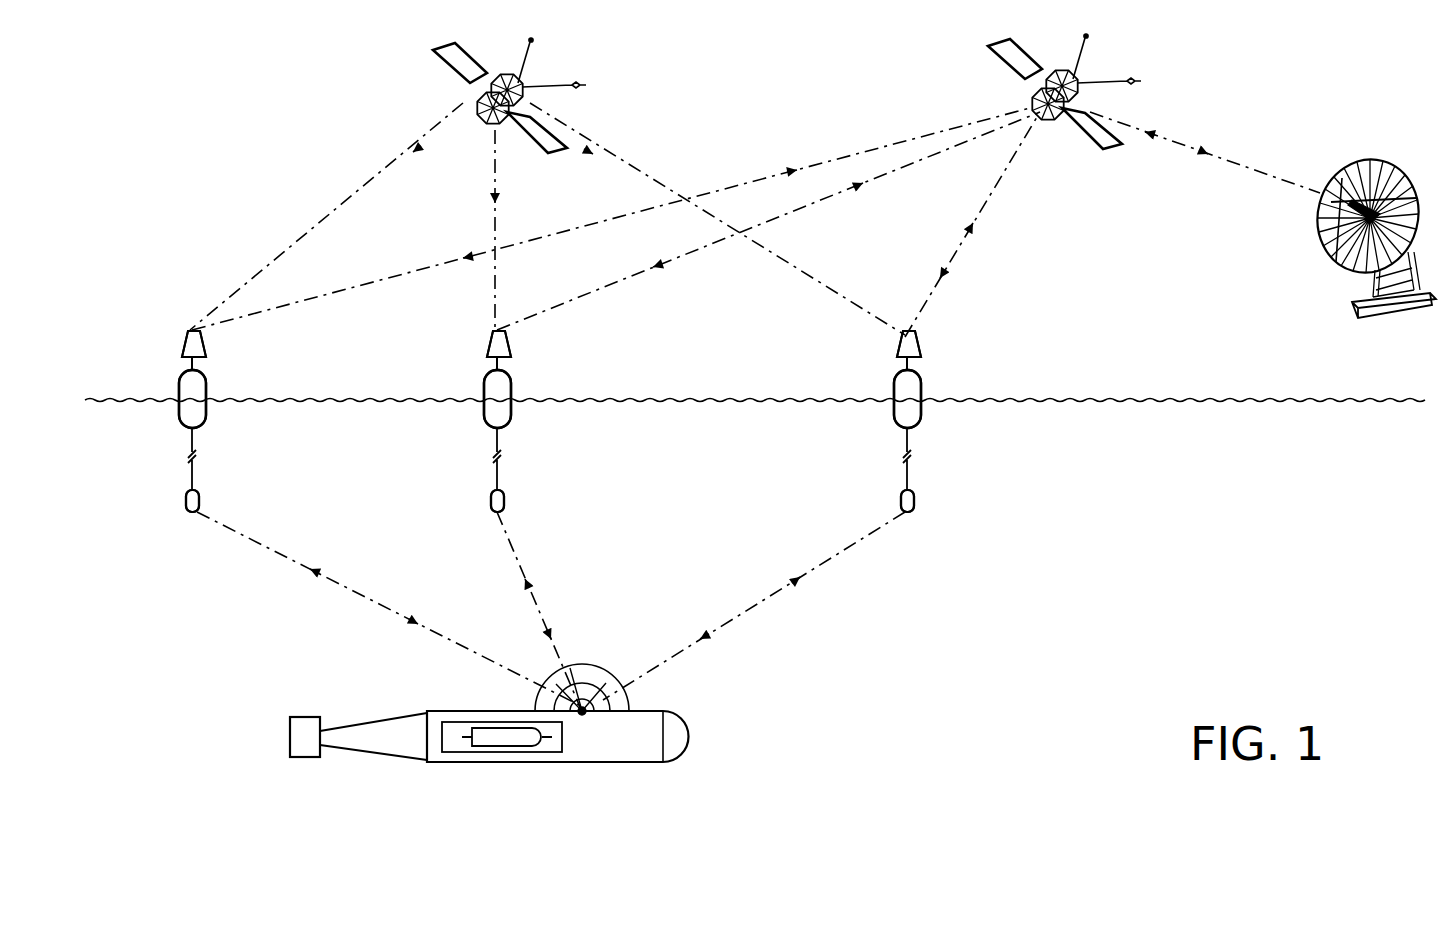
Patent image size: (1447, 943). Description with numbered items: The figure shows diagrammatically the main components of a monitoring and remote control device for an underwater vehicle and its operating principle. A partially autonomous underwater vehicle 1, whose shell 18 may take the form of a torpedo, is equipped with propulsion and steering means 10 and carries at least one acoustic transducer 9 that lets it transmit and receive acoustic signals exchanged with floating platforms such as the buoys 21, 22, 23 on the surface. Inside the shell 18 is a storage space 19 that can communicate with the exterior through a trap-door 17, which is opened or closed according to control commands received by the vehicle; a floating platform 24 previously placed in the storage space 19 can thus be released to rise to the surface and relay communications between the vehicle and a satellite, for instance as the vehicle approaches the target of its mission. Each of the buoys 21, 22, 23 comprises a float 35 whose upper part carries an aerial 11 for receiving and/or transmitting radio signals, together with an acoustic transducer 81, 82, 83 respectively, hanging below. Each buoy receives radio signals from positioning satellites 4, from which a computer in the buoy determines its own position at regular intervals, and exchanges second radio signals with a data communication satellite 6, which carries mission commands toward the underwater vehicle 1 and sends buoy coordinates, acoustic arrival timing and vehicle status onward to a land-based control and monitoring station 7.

The underwater vehicle 1 is at (704, 719).
The buoy 21 is at (170, 427).
The buoy 22 is at (475, 427).
The buoy 23 is at (885, 427).
The positioning satellite 4 is at (438, 84).
The data communication satellite 6 is at (1134, 55).
The land-based control and monitoring station 7 is at (1306, 257).
The acoustic transducer 81 is at (186, 502).
The acoustic transducer 82 is at (490, 502).
The acoustic transducer 83 is at (913, 500).
The acoustic transducer 9 is at (590, 690).
The propulsion and steering means 10 is at (290, 735).
The aerial 11 is at (186, 343).
The trap-door 17 is at (437, 760).
The shell 18 is at (655, 750).
The storage space 19 is at (555, 732).
The floating platform 24 is at (500, 738).
The float 35 is at (197, 388).